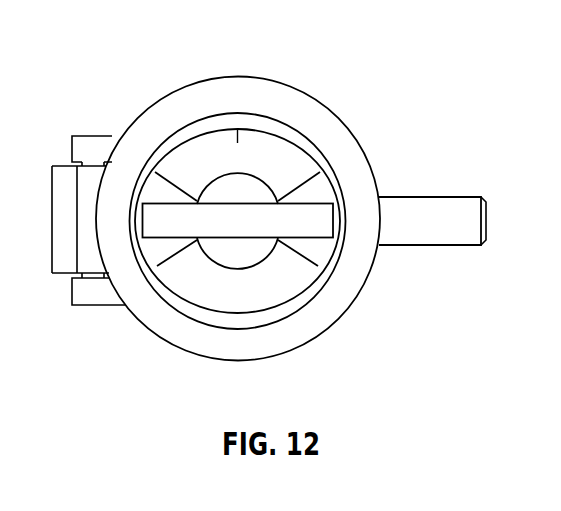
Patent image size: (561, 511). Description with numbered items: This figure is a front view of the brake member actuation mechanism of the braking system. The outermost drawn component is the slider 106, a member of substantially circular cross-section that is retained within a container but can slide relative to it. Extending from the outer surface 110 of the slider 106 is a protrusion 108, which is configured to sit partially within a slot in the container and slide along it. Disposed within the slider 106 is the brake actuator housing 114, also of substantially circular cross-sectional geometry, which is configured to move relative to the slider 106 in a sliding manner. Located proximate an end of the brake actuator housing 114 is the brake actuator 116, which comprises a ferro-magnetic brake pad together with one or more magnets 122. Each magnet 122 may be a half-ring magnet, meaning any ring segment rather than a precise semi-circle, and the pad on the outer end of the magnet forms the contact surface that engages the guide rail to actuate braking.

The slider 106 is at (167, 105).
The protrusion 108 is at (421, 204).
The outer surface 110 is at (317, 100).
The brake actuator housing 114 is at (200, 313).
The brake actuator 116 is at (283, 167).
The magnet 122 is at (237, 143).